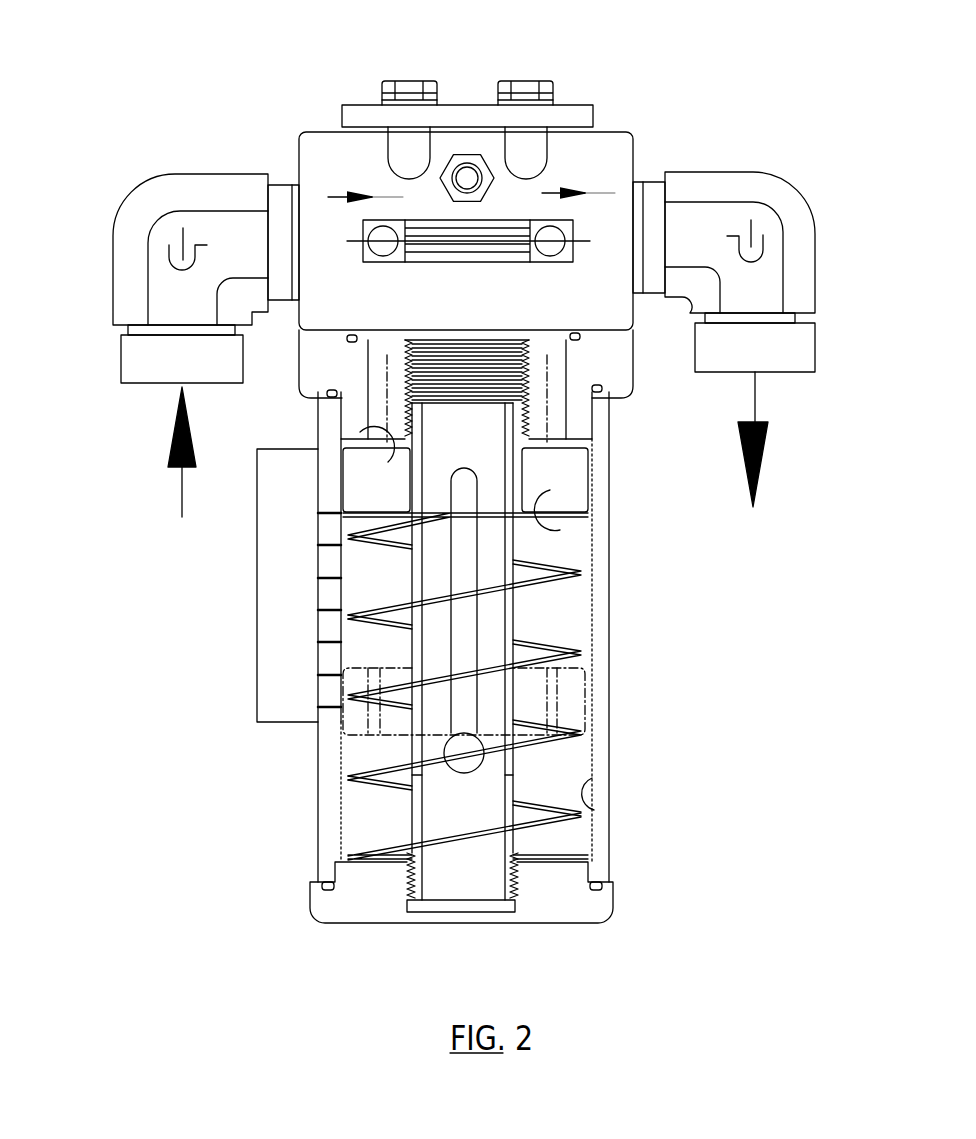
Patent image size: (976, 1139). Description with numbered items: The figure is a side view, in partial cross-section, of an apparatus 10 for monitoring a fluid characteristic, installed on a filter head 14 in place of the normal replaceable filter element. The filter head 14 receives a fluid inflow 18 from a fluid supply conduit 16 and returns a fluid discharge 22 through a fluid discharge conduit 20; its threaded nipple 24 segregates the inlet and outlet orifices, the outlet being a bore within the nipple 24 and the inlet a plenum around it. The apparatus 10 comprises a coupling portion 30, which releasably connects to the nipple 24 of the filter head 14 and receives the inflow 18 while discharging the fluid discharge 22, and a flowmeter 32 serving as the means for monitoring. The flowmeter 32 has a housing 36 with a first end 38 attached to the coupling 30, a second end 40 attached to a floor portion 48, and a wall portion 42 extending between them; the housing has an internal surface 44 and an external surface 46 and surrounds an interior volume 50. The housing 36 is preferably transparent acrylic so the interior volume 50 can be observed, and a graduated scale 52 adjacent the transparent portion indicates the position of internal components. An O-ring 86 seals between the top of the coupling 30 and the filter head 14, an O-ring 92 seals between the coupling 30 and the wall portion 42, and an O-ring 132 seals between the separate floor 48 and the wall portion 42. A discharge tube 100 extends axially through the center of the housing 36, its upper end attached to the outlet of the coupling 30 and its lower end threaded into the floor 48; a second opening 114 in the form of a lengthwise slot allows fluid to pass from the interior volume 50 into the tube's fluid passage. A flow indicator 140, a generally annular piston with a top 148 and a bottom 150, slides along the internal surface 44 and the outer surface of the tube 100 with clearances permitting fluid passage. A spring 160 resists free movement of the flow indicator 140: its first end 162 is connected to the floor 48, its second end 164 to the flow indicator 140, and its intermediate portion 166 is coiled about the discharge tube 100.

The apparatus 10 is at (123, 897).
The filter head 14 is at (583, 152).
The fluid supply conduit 16 is at (155, 202).
The fluid inflow 18 is at (182, 480).
The fluid discharge conduit 20 is at (780, 198).
The fluid discharge 22 is at (755, 392).
The threaded nipple 24 is at (443, 347).
The coupling portion 30 is at (318, 373).
The flowmeter 32 is at (680, 585).
The housing 36 is at (612, 686).
The first end 38 is at (655, 418).
The second end 40 is at (650, 905).
The wall portion 42 is at (598, 650).
The internal surface 44 is at (598, 813).
The external surface 46 is at (607, 732).
The floor portion 48 is at (385, 903).
The interior volume 50 is at (340, 792).
The graduated scale 52 is at (270, 668).
The O-ring 86 is at (357, 336).
The O-ring 92 is at (597, 386).
The discharge tube 100 is at (420, 578).
The second opening 114 is at (465, 633).
The O-ring 132 is at (322, 890).
The flow indicator 140 is at (577, 502).
The top 148 is at (376, 469).
The bottom 150 is at (555, 480).
The spring 160 is at (372, 765).
The first end 162 is at (380, 855).
The second end 164 is at (450, 517).
The intermediate portion 166 is at (533, 645).